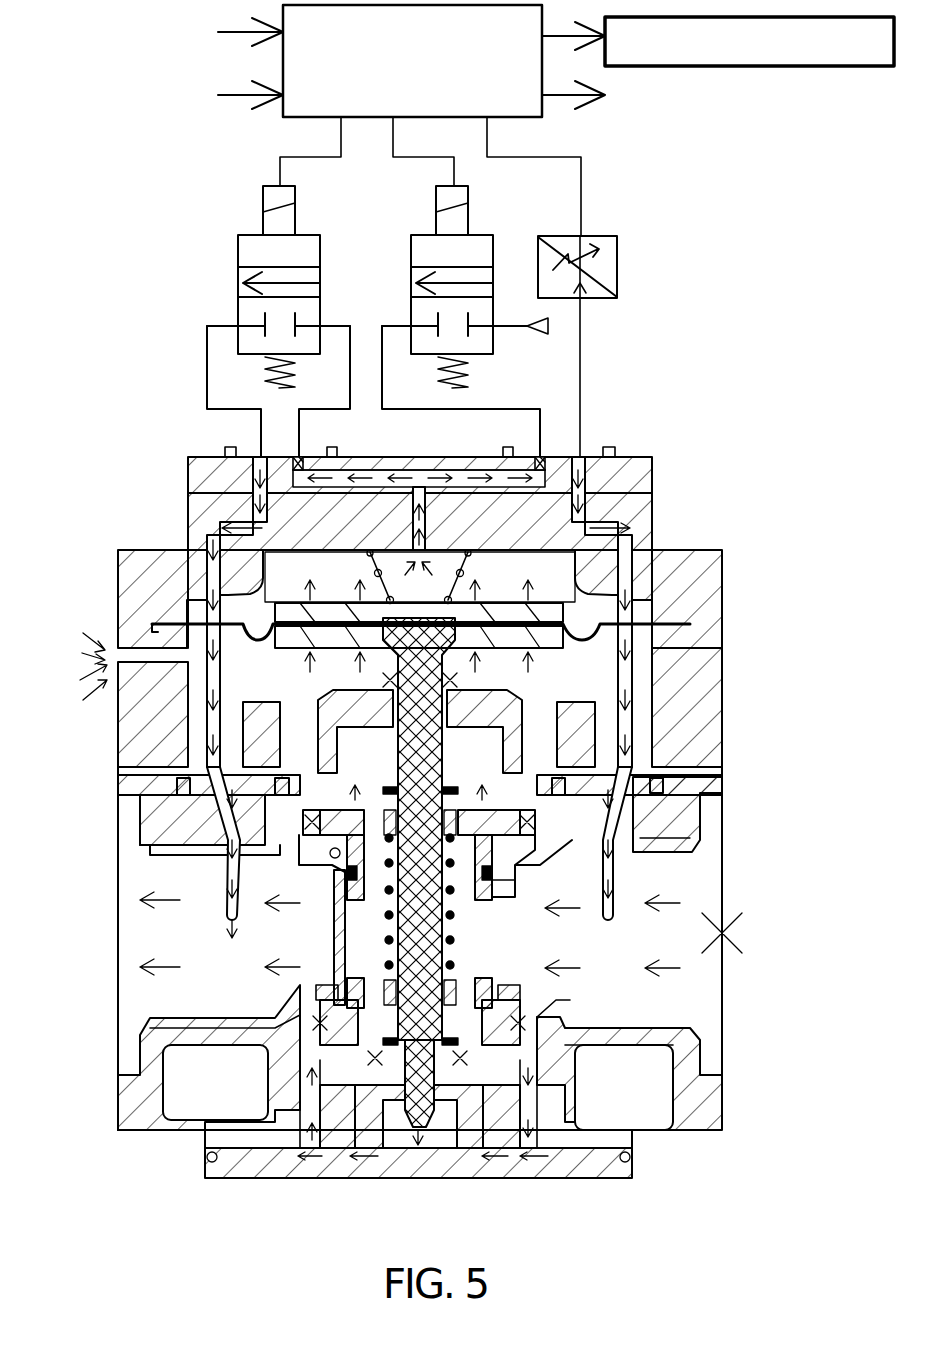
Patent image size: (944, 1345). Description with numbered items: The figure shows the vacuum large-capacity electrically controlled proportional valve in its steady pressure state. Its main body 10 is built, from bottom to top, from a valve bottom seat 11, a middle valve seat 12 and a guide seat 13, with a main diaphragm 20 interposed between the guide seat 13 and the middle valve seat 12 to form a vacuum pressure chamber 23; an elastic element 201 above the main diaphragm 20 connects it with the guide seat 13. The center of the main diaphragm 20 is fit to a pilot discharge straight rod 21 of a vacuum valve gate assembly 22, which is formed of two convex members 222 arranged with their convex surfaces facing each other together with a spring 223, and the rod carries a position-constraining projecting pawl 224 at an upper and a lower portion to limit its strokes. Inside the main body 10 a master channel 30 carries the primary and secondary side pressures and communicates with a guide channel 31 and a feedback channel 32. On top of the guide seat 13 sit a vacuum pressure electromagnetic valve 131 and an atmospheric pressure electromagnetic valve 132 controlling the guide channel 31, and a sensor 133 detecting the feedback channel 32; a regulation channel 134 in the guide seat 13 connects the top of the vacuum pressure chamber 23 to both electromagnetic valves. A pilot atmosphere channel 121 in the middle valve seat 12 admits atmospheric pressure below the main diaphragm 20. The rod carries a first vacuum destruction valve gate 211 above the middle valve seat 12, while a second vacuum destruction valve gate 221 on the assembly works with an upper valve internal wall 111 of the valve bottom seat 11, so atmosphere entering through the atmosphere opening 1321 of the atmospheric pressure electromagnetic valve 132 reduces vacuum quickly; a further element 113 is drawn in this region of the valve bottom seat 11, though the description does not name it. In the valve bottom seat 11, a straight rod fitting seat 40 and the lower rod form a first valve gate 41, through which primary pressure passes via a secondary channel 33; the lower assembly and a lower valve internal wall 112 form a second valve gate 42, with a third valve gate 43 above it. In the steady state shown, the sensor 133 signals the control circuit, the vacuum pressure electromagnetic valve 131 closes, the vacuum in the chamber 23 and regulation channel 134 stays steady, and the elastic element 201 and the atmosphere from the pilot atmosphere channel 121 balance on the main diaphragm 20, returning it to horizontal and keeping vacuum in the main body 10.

The main body 10 is at (690, 1140).
The valve bottom seat 11 is at (736, 1065).
The middle valve seat 12 is at (736, 717).
The guide seat 13 is at (666, 517).
The main diaphragm 20 is at (628, 650).
The pilot discharge straight rod 21 is at (400, 1160).
The vacuum valve gate assembly 22 is at (540, 892).
The vacuum pressure chamber 23 is at (244, 575).
The master channel 30 is at (128, 1051).
The guide channel 31 is at (270, 900).
The feedback channel 32 is at (560, 812).
The secondary channel 33 is at (300, 1148).
The straight rod fitting seat 40 is at (640, 1150).
The first valve gate 41 is at (465, 1148).
The second valve gate 42 is at (540, 1050).
The third valve gate 43 is at (560, 1010).
The upper valve internal wall 111 is at (545, 858).
The lower valve internal wall 112 is at (545, 985).
The ball 113 is at (330, 855).
The pilot atmosphere channel 121 is at (137, 650).
The vacuum pressure electromagnetic valve 131 is at (238, 238).
The atmospheric pressure electromagnetic valve 132 is at (412, 238).
The sensor 133 is at (610, 236).
The regulation channel 134 is at (548, 462).
The elastic element 201 is at (330, 540).
The first vacuum destruction valve gate 211 is at (365, 712).
The second vacuum destruction valve gate 221 is at (300, 792).
The convex member 222 is at (350, 1010).
The spring 223 is at (385, 912).
The position-constraining projecting pawl 224 is at (400, 1145).
The atmosphere opening 1321 is at (540, 334).